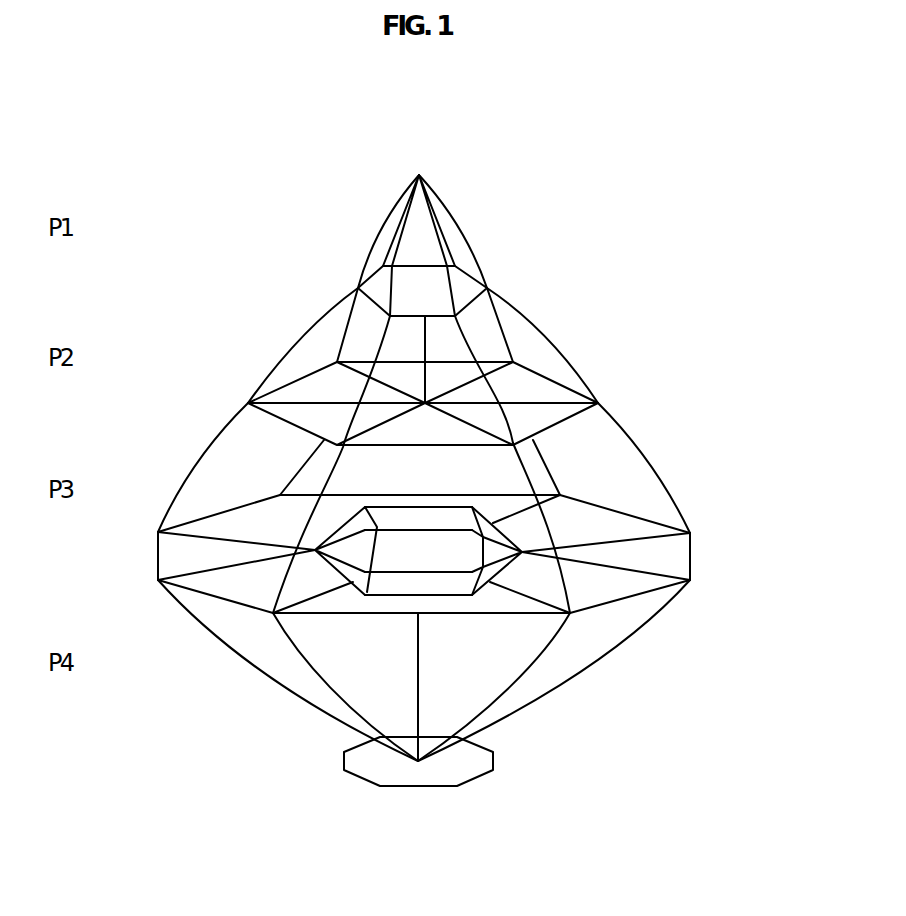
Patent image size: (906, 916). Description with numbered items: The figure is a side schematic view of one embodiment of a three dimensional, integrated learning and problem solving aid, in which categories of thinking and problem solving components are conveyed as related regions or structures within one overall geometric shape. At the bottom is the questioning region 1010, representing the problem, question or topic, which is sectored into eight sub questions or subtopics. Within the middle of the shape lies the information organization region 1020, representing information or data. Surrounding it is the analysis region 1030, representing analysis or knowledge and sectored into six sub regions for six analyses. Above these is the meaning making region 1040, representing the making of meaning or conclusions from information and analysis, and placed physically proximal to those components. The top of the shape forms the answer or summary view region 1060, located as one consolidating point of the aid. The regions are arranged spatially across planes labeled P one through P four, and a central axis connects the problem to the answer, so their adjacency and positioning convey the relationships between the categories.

The answer or summary view region 1060 is at (493, 288).
The meaning making region 1040 is at (602, 290).
The analysis region 1030 is at (697, 410).
The information organization region 1020 is at (447, 564).
The questioning region 1010 is at (697, 588).